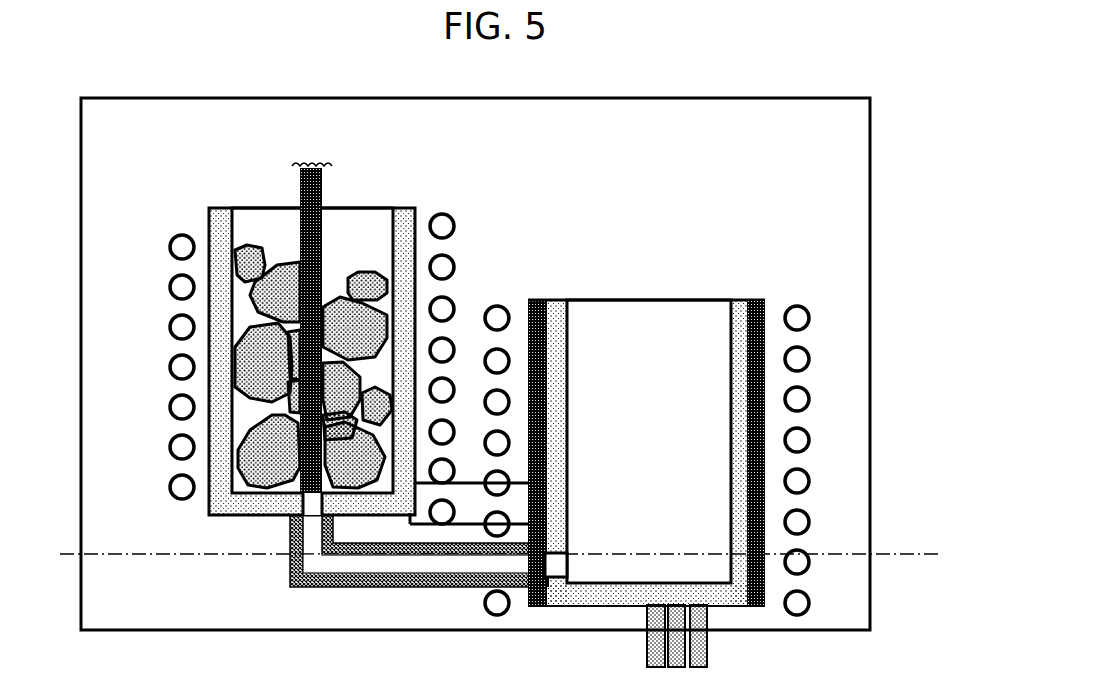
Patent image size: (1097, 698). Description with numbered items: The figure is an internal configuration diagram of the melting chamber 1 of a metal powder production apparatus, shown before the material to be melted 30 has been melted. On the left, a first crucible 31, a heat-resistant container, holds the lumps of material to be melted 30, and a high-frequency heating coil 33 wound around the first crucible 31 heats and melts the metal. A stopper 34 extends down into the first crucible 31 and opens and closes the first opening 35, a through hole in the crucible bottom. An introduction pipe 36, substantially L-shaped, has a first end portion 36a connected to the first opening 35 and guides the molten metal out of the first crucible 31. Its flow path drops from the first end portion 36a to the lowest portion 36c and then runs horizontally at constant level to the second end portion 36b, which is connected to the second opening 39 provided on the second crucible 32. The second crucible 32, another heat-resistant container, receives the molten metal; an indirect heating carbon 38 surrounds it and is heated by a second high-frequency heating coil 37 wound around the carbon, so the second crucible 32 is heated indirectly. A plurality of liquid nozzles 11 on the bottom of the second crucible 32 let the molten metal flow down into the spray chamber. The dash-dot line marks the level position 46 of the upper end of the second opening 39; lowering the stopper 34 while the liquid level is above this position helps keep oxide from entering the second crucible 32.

The melting chamber 1 is at (840, 133).
The liquid nozzles 11 is at (708, 645).
The material to be melted 30 is at (367, 272).
The first crucible 31 is at (226, 208).
The second crucible 32 is at (556, 300).
The high-frequency heating coil 33 is at (180, 235).
The stopper 34 is at (323, 182).
The first opening 35 is at (300, 504).
The introduction pipe 36 is at (290, 563).
The first end portion 36a is at (333, 520).
The second end portion 36b is at (548, 585).
The lowest portion 36c is at (452, 563).
The high-frequency heating coil 37 is at (797, 305).
The indirect heating carbon 38 is at (760, 300).
The second opening 39 is at (565, 550).
The level position 46 is at (129, 552).